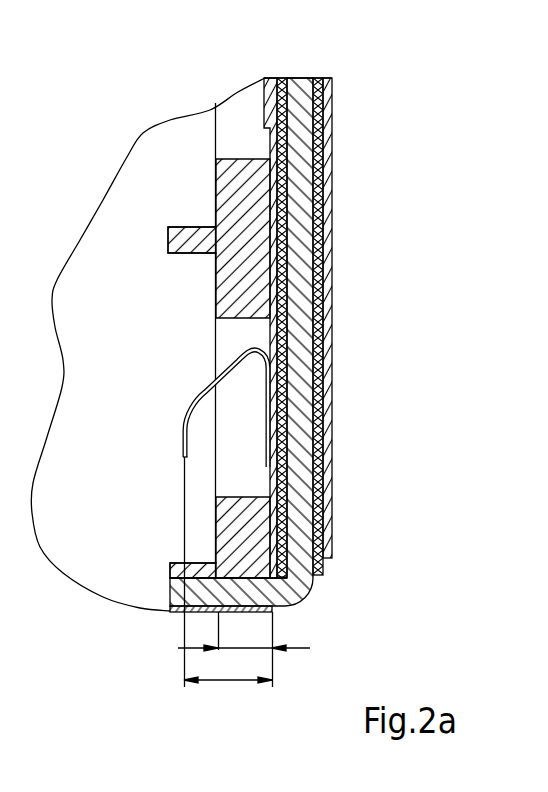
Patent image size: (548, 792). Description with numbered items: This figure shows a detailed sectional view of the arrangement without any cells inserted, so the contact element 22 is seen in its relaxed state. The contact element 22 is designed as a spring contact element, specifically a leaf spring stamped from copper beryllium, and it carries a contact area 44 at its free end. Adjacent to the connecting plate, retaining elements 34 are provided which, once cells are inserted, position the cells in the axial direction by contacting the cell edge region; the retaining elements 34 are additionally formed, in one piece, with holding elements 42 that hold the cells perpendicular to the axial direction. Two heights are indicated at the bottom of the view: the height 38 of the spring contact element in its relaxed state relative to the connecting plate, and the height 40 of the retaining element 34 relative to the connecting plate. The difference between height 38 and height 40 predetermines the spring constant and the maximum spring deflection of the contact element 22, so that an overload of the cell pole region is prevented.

The contact element 22 is at (228, 360).
The retaining element 34 is at (245, 240).
The height of the spring contact element 38 is at (218, 682).
The height of the retaining element 40 is at (240, 648).
The holding element 42 is at (193, 238).
The contact area 44 is at (173, 436).